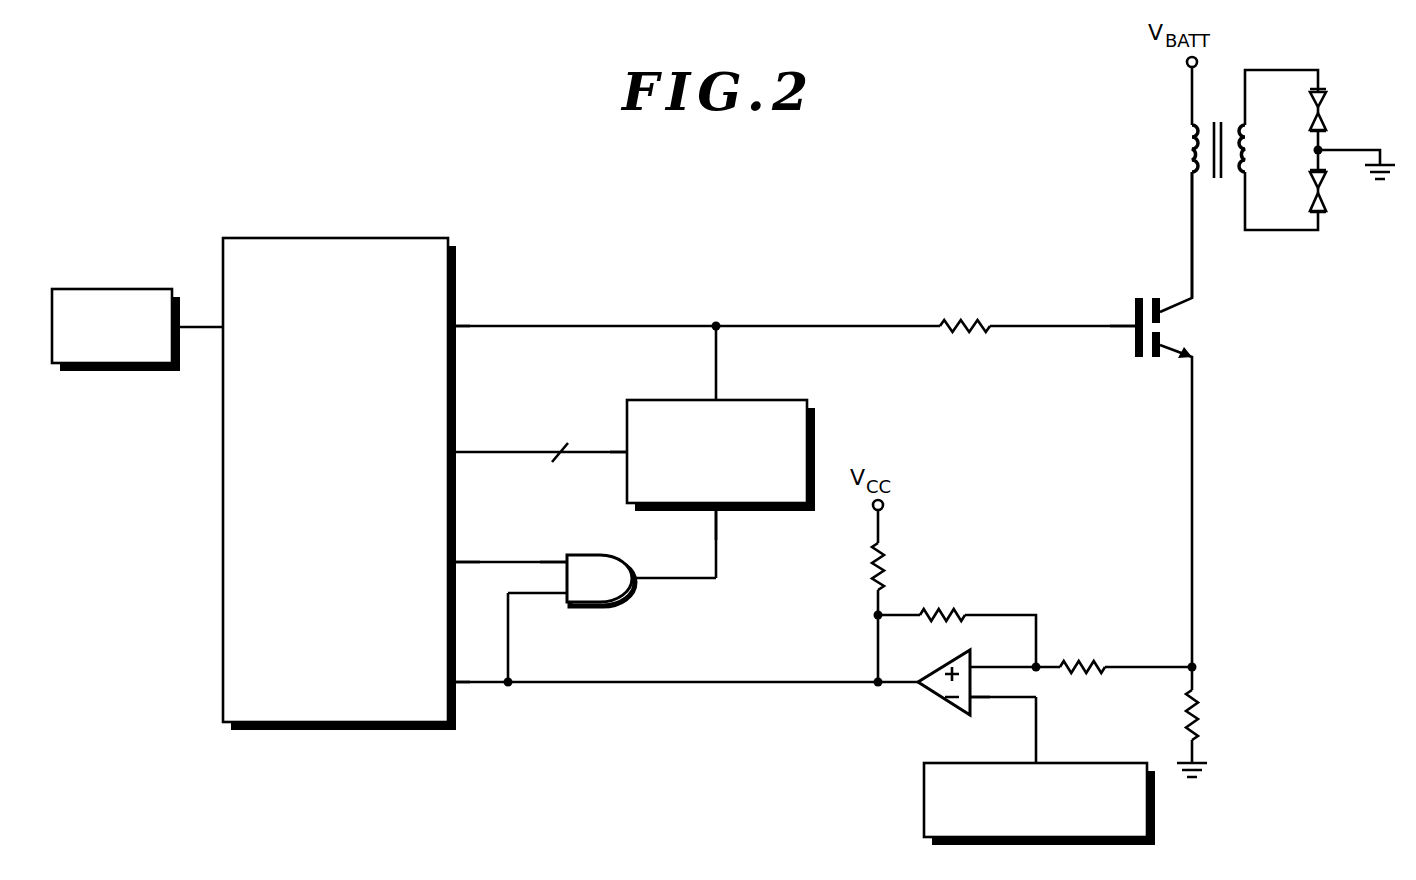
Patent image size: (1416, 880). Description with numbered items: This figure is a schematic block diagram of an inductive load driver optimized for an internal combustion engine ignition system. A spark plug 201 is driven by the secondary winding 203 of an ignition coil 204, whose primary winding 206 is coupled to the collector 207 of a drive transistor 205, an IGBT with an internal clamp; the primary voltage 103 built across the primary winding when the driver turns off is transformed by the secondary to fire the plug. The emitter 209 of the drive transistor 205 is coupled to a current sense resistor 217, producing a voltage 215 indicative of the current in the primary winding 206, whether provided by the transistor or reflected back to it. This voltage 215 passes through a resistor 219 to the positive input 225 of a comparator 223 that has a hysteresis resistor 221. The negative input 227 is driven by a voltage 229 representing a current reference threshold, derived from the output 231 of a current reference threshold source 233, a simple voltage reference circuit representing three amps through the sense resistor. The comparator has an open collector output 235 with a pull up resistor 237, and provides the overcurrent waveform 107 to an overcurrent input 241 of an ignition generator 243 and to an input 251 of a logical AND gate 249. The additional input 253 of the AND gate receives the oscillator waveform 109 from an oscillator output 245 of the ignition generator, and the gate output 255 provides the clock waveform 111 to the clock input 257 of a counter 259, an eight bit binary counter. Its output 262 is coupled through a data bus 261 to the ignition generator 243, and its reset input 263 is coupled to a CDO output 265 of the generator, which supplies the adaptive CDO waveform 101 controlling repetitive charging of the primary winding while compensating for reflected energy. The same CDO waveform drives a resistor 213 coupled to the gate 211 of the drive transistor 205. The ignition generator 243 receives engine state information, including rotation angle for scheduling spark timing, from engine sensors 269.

The CDO waveform 101 is at (623, 286).
The primary voltage 103 is at (1192, 210).
The overcurrent waveform 107 is at (606, 680).
The oscillator waveform 109 is at (486, 566).
The clock waveform 111 is at (717, 548).
The spark plug 201 is at (1325, 110).
The secondary winding 203 is at (1247, 152).
The ignition coil 204 is at (1215, 128).
The drive transistor 205 is at (1180, 328).
The primary winding 206 is at (1190, 151).
The collector 207 is at (1198, 296).
The emitter 209 is at (1194, 366).
The gate 211 is at (1132, 324).
The resistor 213 is at (966, 318).
The voltage 215 is at (1198, 662).
The current sense resistor 217 is at (1200, 700).
The resistor 219 is at (1085, 655).
The hysteresis resistor 221 is at (943, 608).
The comparator 223 is at (945, 665).
The positive input 225 is at (973, 662).
The negative input 227 is at (975, 703).
The voltage 229 is at (1048, 697).
The output 231 is at (1040, 762).
The current reference threshold source 233 is at (924, 797).
The open collector output 235 is at (920, 688).
The pull up resistor 237 is at (870, 576).
The overcurrent input 241 is at (458, 686).
The ignition generator 243 is at (223, 507).
The oscillator output 245 is at (460, 562).
The logical AND gate 249 is at (588, 554).
The input 251 is at (558, 597).
The additional input 253 is at (566, 562).
The output 255 is at (634, 582).
The clock input 257 is at (717, 513).
The counter 259 is at (815, 452).
The data bus 261 is at (541, 471).
The output 262 is at (625, 447).
The reset input 263 is at (717, 398).
The CDO output 265 is at (458, 330).
The engine sensors 269 is at (112, 289).